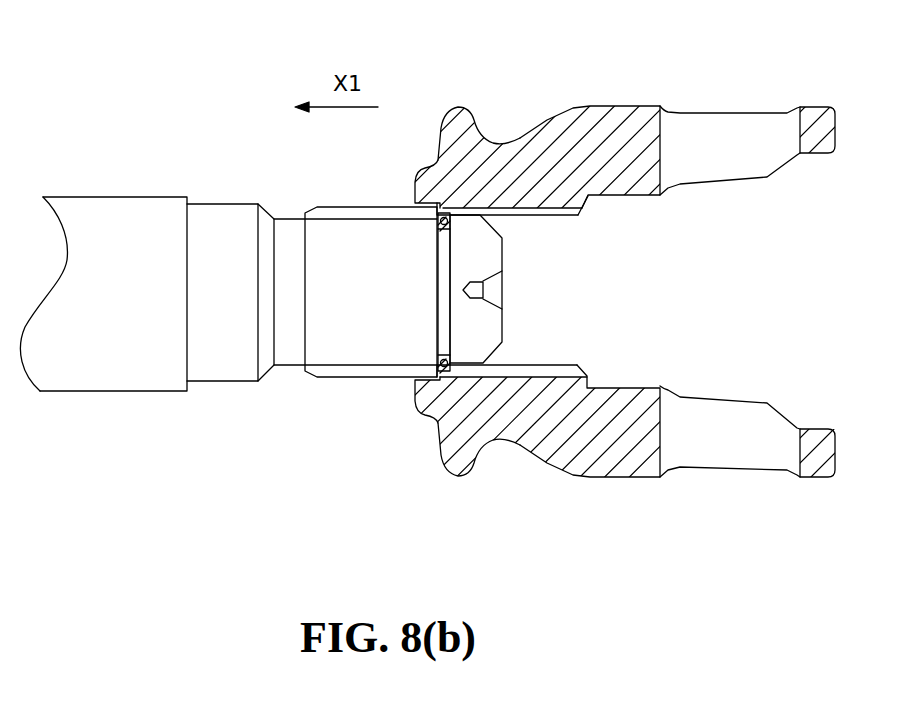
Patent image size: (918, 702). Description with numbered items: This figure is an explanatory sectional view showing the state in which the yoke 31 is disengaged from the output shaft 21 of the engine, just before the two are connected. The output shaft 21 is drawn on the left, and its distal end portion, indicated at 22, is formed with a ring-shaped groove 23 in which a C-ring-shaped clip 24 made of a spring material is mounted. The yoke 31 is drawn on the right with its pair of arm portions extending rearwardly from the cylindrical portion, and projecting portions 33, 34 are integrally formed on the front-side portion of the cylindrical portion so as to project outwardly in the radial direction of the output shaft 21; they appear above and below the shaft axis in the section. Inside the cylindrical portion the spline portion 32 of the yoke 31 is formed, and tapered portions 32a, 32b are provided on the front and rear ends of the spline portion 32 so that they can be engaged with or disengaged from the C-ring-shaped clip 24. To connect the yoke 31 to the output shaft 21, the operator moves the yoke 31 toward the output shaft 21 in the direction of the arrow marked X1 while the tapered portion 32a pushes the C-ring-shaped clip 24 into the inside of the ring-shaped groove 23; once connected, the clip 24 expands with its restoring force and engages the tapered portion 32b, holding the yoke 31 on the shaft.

The output shaft 21 is at (243, 217).
The shaft end block 22 is at (343, 378).
The ring-shaped groove 23 is at (445, 313).
The C-ring-shaped clip 24 is at (439, 224).
The yoke 31 is at (610, 112).
The spline portion 32 is at (513, 213).
The tapered portion 32a is at (437, 215).
The tapered portion 32b is at (583, 208).
The projecting portion 33 is at (468, 105).
The projecting portion 34 is at (453, 470).